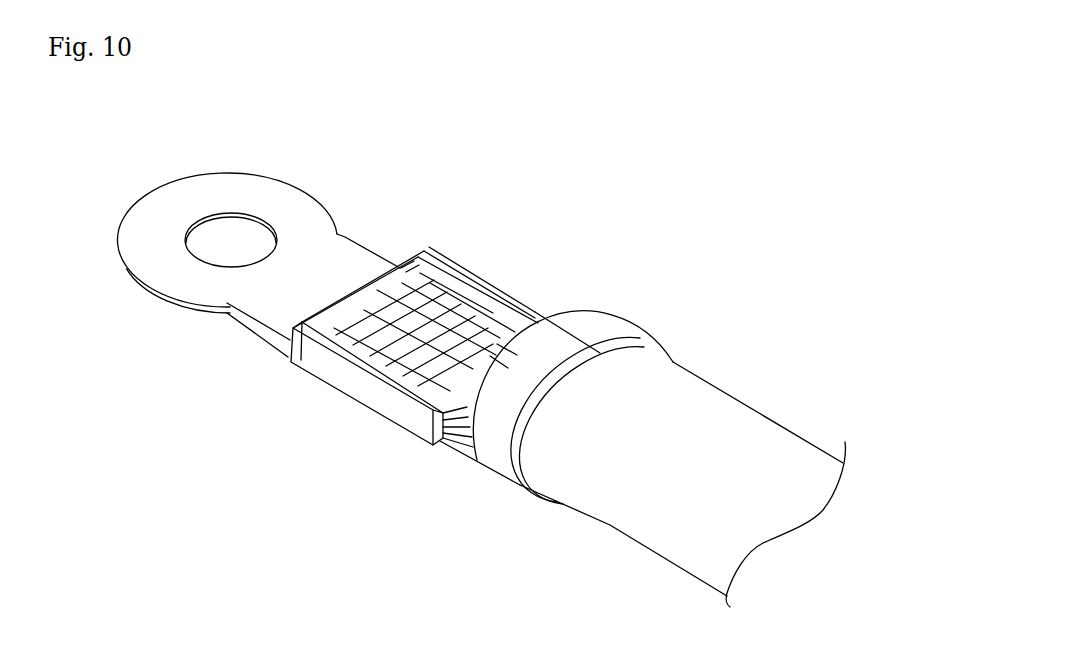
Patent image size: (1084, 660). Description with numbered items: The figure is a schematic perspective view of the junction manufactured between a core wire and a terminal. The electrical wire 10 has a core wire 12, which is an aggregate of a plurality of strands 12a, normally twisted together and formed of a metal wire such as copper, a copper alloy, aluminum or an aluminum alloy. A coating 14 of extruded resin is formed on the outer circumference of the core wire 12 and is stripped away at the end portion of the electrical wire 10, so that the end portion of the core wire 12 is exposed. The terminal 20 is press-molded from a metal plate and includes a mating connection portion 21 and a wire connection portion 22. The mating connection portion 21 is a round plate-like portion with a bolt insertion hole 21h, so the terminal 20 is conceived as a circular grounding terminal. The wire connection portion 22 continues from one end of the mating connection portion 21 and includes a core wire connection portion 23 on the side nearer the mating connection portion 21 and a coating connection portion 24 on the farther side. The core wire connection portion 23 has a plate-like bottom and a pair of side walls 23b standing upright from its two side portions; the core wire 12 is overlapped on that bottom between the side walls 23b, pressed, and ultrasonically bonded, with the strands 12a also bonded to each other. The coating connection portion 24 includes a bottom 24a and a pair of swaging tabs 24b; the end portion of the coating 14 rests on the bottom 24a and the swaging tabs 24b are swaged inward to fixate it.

The electrical wire 10 is at (757, 408).
The core wire 12 is at (493, 290).
The strand 12a is at (418, 255).
The coating 14 is at (800, 510).
The terminal 20 is at (322, 186).
The mating connection portion 21 is at (212, 188).
The bolt insertion hole 21h is at (252, 225).
The wire connection portion 22 is at (462, 455).
The core wire connection portion 23 is at (450, 260).
The side walls 23b is at (477, 270).
The coating connection portion 24 is at (523, 487).
The bottom 24a is at (562, 503).
The swaging tabs 24b is at (610, 340).